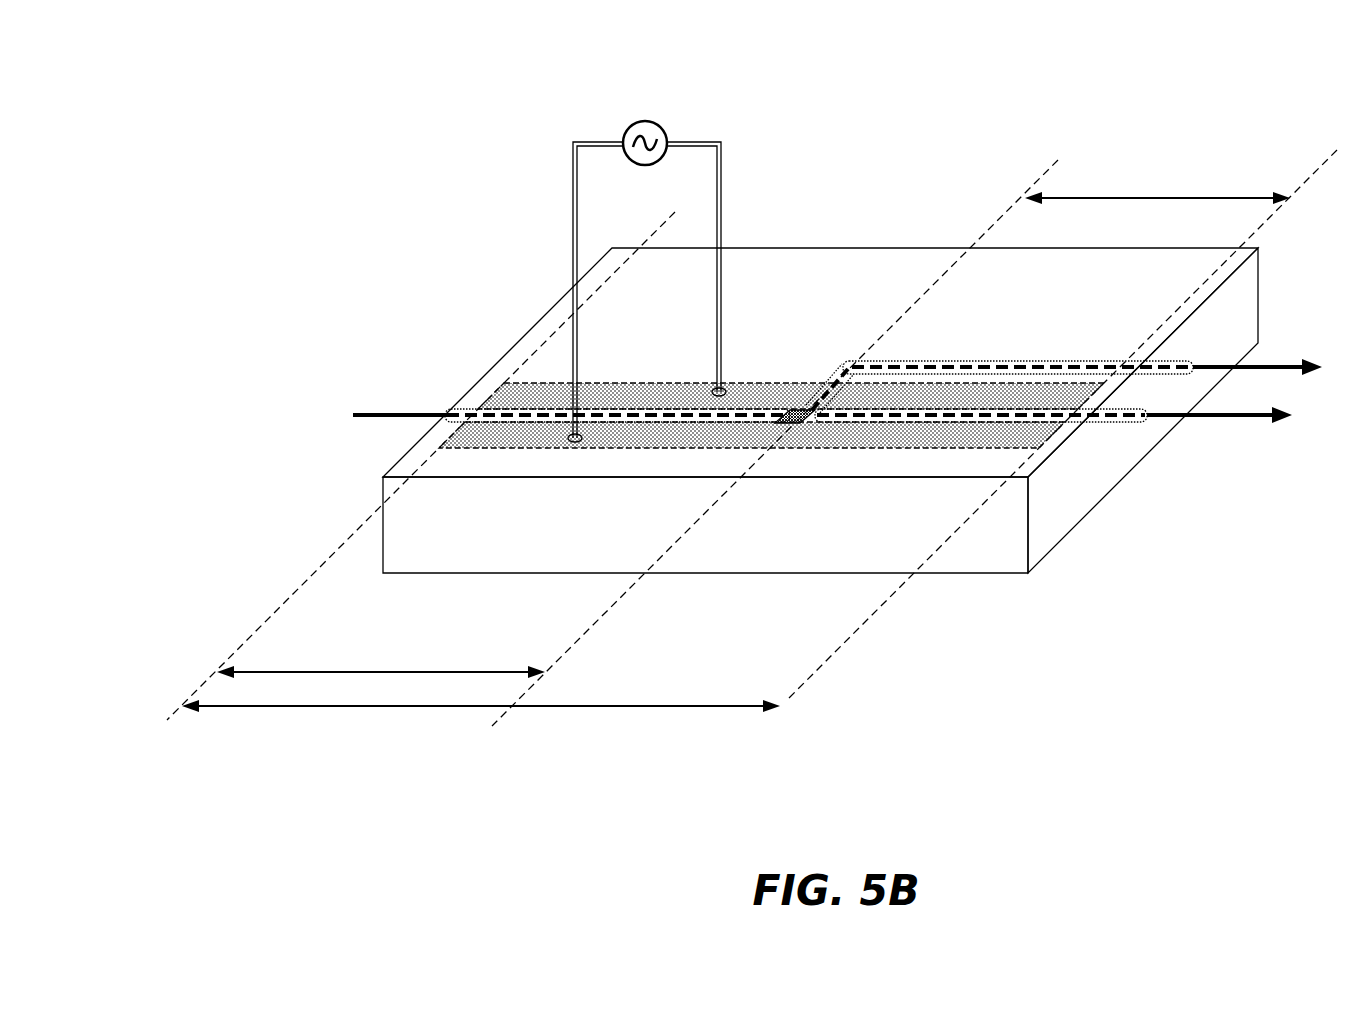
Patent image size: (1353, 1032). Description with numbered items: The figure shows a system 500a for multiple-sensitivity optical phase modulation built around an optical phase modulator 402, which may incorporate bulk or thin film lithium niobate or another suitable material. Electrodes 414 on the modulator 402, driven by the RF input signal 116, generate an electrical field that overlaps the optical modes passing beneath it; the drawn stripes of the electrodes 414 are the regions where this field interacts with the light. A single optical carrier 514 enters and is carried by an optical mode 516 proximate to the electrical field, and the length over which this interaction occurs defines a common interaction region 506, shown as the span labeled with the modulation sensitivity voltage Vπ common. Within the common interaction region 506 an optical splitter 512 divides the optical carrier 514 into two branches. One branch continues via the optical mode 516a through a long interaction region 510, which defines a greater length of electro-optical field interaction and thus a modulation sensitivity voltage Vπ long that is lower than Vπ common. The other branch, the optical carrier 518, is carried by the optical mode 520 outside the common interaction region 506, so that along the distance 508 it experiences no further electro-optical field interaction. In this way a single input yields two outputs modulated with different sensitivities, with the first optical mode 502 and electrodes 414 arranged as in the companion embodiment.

The system for multiple-sensitivity optical phase modulation 500a is at (302, 92).
The optical phase modulator 402 is at (1067, 482).
The electrodes 414 is at (1093, 407).
The first optical mode 502 is at (888, 433).
The optical carrier 514 is at (390, 413).
The optical mode 516 is at (520, 410).
The optical mode 516a is at (976, 421).
The optical splitter 512 is at (800, 423).
The optical carrier 518 is at (910, 365).
The optical mode 520 is at (1003, 363).
The RF input signal 116 is at (645, 121).
The common interaction region 506 is at (407, 672).
The long interaction region 510 is at (712, 703).
The distance 508 is at (1182, 195).